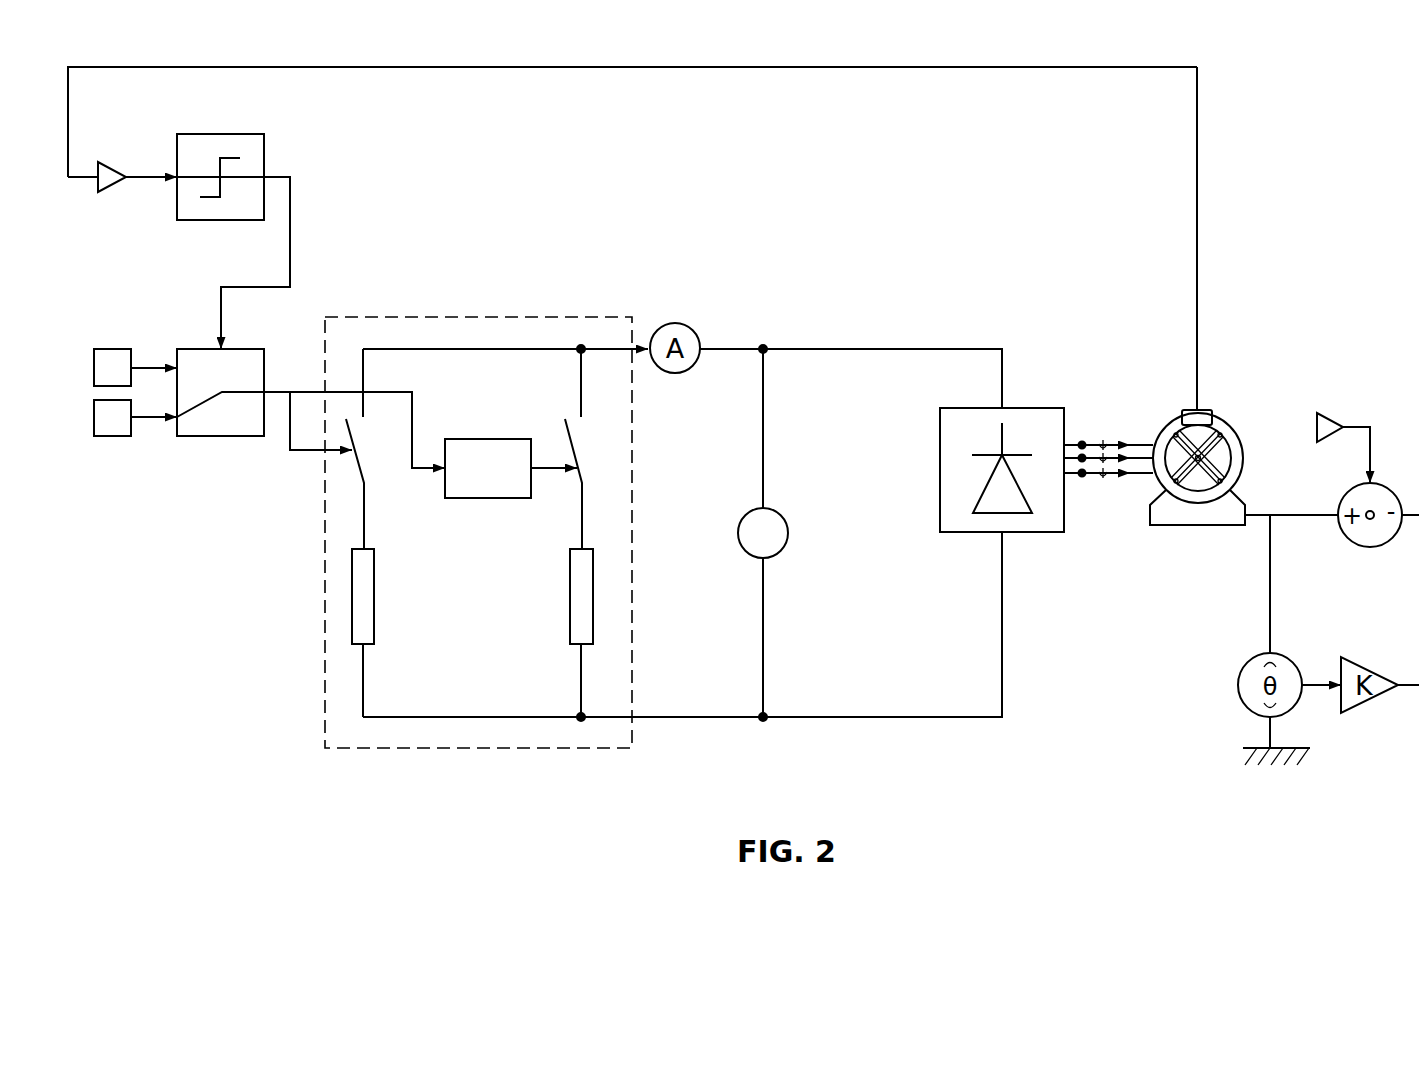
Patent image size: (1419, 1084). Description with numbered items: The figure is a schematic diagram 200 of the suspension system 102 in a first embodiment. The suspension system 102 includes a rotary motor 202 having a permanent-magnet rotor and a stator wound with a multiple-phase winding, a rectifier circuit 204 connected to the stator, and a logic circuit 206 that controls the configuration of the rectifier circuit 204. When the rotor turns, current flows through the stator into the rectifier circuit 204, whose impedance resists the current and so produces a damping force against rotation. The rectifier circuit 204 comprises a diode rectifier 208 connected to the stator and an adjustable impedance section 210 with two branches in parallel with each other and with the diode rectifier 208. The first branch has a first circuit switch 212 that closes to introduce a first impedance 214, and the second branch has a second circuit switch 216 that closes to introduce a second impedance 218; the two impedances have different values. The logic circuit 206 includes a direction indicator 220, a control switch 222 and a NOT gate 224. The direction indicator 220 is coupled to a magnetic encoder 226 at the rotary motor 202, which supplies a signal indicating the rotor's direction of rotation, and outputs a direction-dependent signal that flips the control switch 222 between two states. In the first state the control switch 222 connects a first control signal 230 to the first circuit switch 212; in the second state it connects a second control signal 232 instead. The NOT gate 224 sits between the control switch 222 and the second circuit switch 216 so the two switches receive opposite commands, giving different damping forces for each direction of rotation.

The schematic diagram 200 is at (1248, 95).
The suspension system 102 is at (1207, 232).
The rotary motor 202 is at (1222, 427).
The rectifier circuit 204 is at (797, 323).
The logic circuit 206 is at (362, 293).
The diode rectifier 208 is at (1020, 413).
The adjustable impedance section 210 is at (550, 317).
The first circuit switch 212 is at (338, 474).
The first impedance 214 is at (352, 598).
The second circuit switch 216 is at (580, 455).
The second impedance 218 is at (570, 596).
The direction indicator 220 is at (198, 147).
The control switch 222 is at (190, 355).
The NOT gate 224 is at (492, 437).
The magnetic encoder 226 is at (1185, 412).
The first control signal 230 is at (105, 355).
The second control signal 232 is at (112, 432).